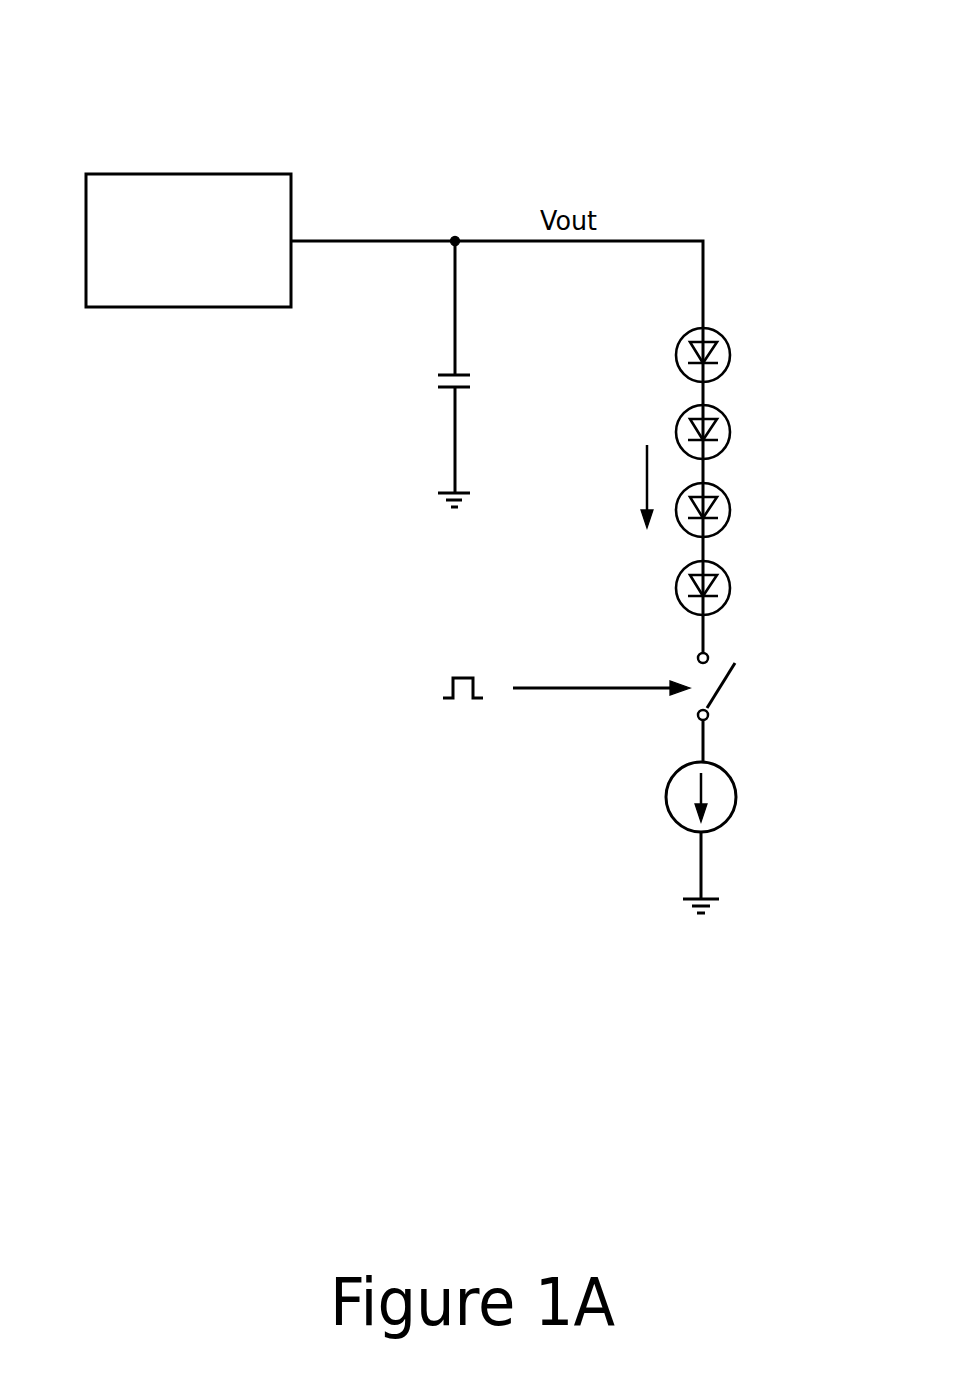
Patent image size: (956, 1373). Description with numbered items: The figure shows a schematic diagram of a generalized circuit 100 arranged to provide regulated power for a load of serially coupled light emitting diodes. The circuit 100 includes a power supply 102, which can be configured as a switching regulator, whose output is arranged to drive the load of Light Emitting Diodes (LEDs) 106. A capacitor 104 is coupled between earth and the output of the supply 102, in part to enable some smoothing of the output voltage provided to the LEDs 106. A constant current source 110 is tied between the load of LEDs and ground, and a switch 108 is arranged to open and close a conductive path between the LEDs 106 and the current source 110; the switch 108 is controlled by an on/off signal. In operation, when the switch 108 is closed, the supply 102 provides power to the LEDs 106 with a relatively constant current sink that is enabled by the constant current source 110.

The circuit 100 is at (533, 61).
The power supply 102 is at (133, 308).
The capacitor 104 is at (438, 386).
The Light Emitting Diodes (LEDs) 106 is at (742, 331).
The switch 108 is at (720, 690).
The constant current source 110 is at (737, 803).